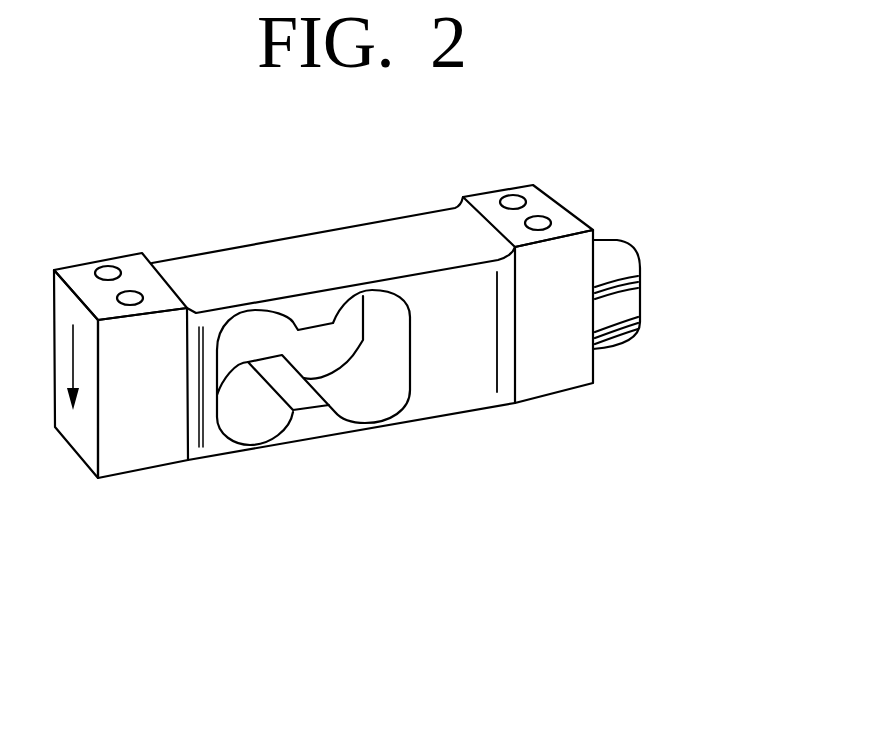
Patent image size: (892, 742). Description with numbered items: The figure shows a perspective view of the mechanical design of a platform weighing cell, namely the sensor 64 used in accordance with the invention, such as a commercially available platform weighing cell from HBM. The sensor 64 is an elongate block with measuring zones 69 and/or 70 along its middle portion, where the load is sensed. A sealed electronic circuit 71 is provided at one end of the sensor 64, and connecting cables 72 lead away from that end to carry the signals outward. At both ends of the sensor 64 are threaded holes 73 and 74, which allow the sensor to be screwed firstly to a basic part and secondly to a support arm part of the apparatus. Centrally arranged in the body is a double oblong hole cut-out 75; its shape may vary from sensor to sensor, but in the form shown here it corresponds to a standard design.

The sensor 64 is at (406, 371).
The measuring zone 69 is at (311, 247).
The measuring zone 70 is at (317, 443).
The sealed electronic circuit 71 is at (555, 293).
The connecting cables 72 is at (632, 300).
The threaded holes 73 is at (106, 268).
The threaded holes 74 is at (512, 202).
The double oblong hole cut-out 75 is at (252, 330).